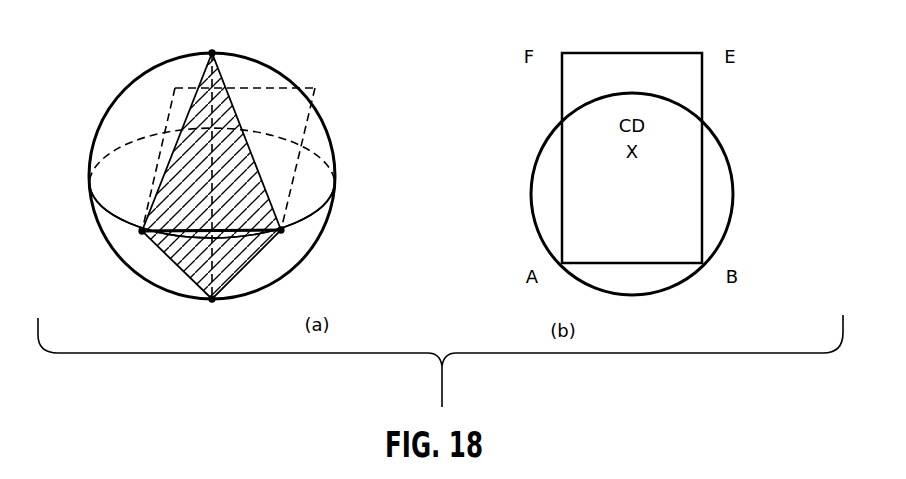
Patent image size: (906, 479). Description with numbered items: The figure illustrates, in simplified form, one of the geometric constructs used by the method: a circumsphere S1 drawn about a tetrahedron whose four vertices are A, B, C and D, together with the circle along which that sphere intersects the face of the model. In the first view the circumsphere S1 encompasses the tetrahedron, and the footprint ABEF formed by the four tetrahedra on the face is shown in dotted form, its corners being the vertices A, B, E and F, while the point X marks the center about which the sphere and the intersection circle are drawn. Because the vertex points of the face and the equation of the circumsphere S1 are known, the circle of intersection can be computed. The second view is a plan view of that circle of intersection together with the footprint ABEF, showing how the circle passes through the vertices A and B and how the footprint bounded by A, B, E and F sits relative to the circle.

The circumsphere S1 is at (273, 63).
The vertex A is at (136, 244).
The vertex B is at (288, 244).
The vertex C is at (212, 37).
The vertex D is at (212, 314).
The vertex E is at (337, 91).
The vertex F is at (161, 90).
The center X is at (212, 180).